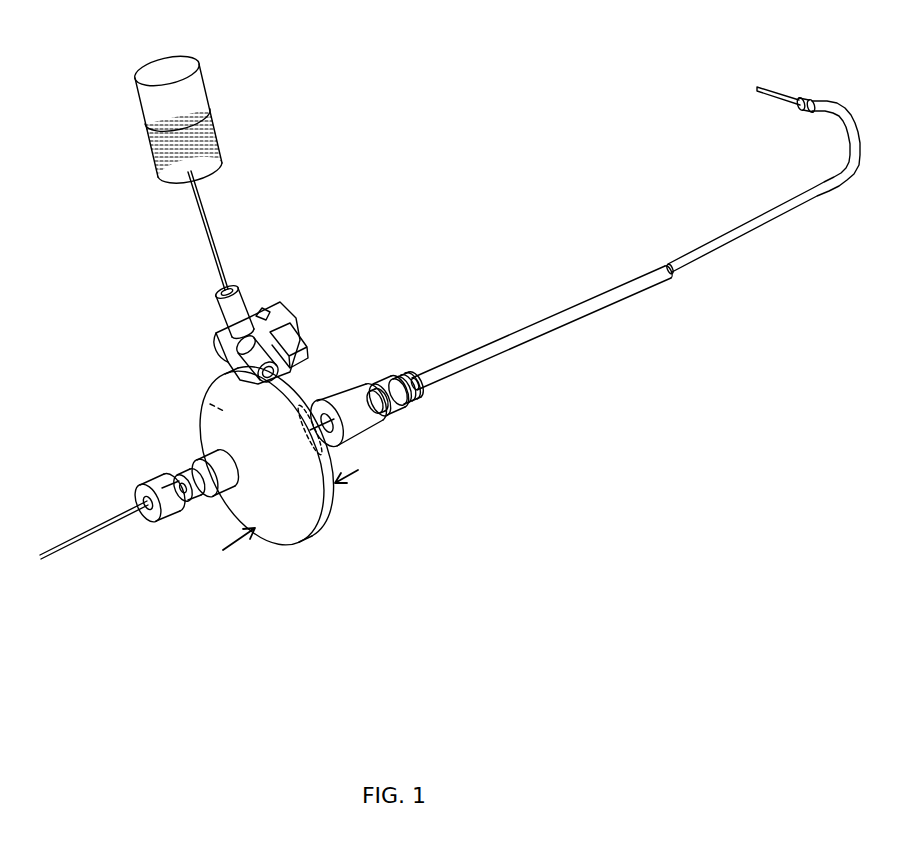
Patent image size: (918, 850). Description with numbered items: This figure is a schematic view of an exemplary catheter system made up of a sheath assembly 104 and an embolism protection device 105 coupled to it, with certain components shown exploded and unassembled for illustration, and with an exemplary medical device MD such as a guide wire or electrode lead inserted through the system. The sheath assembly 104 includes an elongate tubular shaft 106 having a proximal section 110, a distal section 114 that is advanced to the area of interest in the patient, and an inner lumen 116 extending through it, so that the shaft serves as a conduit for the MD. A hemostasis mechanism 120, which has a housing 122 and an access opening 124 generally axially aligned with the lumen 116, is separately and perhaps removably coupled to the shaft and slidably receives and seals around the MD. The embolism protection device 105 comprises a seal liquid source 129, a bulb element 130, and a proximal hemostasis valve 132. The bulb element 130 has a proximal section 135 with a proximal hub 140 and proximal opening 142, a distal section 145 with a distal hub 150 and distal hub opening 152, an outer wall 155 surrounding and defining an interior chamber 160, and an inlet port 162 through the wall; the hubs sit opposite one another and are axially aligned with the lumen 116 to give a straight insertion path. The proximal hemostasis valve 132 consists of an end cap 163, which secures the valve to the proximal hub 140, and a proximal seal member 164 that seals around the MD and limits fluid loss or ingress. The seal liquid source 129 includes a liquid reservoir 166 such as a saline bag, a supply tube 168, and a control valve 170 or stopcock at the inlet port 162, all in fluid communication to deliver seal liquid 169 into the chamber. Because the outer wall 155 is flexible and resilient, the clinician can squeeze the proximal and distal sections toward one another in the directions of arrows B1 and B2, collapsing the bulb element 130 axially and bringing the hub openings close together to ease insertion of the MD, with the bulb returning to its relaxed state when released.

The sheath assembly 104 is at (635, 267).
The embolism protection device 105 is at (255, 277).
The elongate tubular shaft 106 is at (513, 337).
The proximal section 110 is at (443, 375).
The distal section 114 is at (811, 191).
The inner lumen 116 is at (673, 270).
The hemostasis mechanism 120 is at (377, 424).
The housing 122 is at (363, 428).
The access opening 124 is at (342, 396).
The seal liquid source 129 is at (213, 128).
The bulb element 130 is at (327, 506).
The proximal hemostasis valve 132 is at (165, 495).
The proximal section 135 is at (273, 541).
The proximal hub 140 is at (221, 494).
The proximal opening 142 is at (196, 465).
The distal section 145 is at (333, 503).
The distal hub 150 is at (340, 404).
The distal hub opening 152 is at (373, 398).
The outer wall 155 is at (212, 381).
The interior chamber 160 is at (210, 404).
The inlet port 162 is at (215, 357).
The end cap 163 is at (162, 514).
The proximal seal member 164 is at (196, 507).
The liquid reservoir 166 is at (207, 96).
The supply tube 168 is at (203, 183).
The seal liquid 169 is at (197, 118).
The control valve 170 is at (262, 313).
The arrow B1 is at (247, 533).
The arrow B2 is at (358, 478).
The medical device MD is at (77, 537).